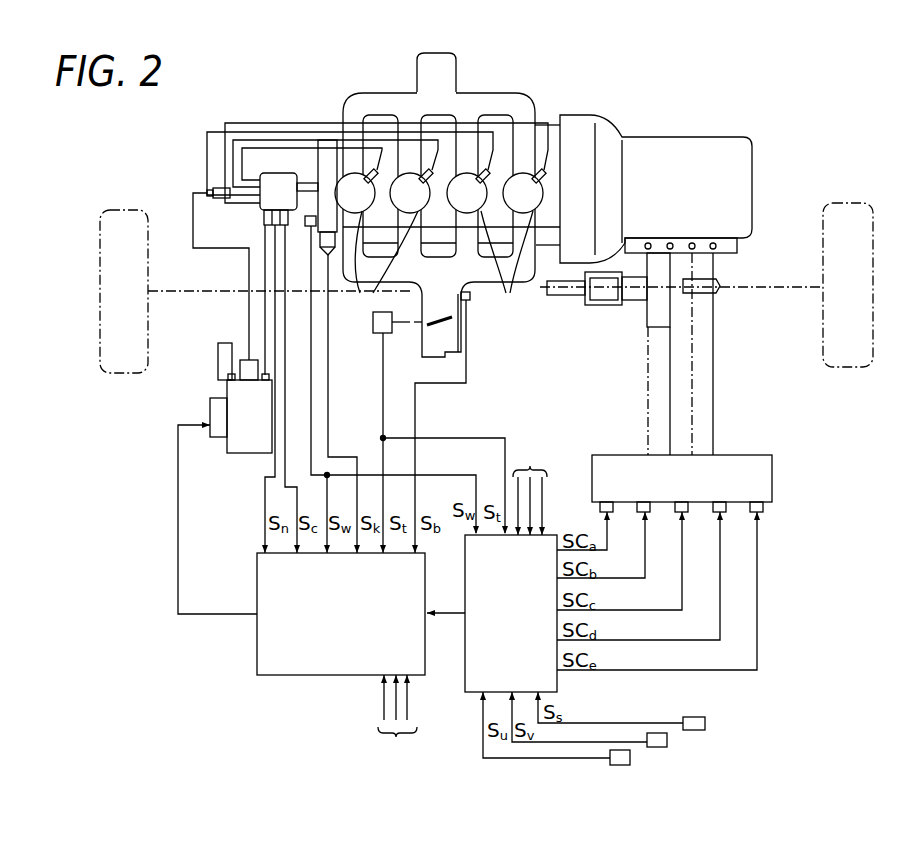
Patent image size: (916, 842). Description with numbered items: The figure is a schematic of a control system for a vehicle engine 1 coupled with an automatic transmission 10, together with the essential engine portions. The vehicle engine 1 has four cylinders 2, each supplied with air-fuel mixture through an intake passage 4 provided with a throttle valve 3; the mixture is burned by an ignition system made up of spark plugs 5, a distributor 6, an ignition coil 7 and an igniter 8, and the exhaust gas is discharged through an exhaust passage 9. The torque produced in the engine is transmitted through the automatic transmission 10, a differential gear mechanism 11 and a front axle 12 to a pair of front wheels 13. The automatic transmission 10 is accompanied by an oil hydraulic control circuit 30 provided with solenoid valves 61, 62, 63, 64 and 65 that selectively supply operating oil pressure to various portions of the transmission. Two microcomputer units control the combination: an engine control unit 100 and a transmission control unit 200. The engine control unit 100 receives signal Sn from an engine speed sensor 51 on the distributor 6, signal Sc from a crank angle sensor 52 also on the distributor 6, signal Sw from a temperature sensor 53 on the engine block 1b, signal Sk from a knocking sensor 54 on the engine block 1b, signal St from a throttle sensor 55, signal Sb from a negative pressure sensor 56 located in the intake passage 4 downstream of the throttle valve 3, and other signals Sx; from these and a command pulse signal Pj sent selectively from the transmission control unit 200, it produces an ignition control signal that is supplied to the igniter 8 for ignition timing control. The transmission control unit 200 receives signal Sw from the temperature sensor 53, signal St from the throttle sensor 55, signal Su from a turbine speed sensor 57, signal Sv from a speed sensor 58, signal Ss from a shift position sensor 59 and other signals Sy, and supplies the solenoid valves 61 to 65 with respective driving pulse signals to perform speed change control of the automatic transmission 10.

The vehicle engine 1 is at (337, 111).
The engine block 1b is at (557, 140).
The cylinders 2 is at (370, 293).
The throttle valve 3 is at (427, 324).
The intake passage 4 is at (448, 295).
The spark plugs 5 is at (440, 186).
The distributor 6 is at (277, 186).
The ignition coil 7 is at (252, 447).
The igniter 8 is at (218, 438).
The exhaust passage 9 is at (448, 86).
The automatic transmission 10 is at (722, 136).
The differential gear mechanism 11 is at (632, 310).
The front axle 12 is at (566, 296).
The front wheels 13 is at (150, 330).
The oil hydraulic control circuit 30 is at (747, 455).
The engine speed sensor 51 is at (264, 211).
The crank angle sensor 52 is at (266, 222).
The temperature sensor 53 is at (308, 224).
The knocking sensor 54 is at (318, 174).
The throttle sensor 55 is at (373, 328).
The negative pressure sensor 56 is at (467, 300).
The turbine speed sensor 57 is at (630, 760).
The speed sensor 58 is at (667, 742).
The shift position sensor 59 is at (705, 725).
The solenoid valve 61 is at (613, 510).
The solenoid valve 62 is at (650, 510).
The solenoid valve 63 is at (688, 510).
The solenoid valve 64 is at (727, 510).
The solenoid valve 65 is at (763, 510).
The engine control unit 100 is at (285, 680).
The transmission control unit 200 is at (464, 693).